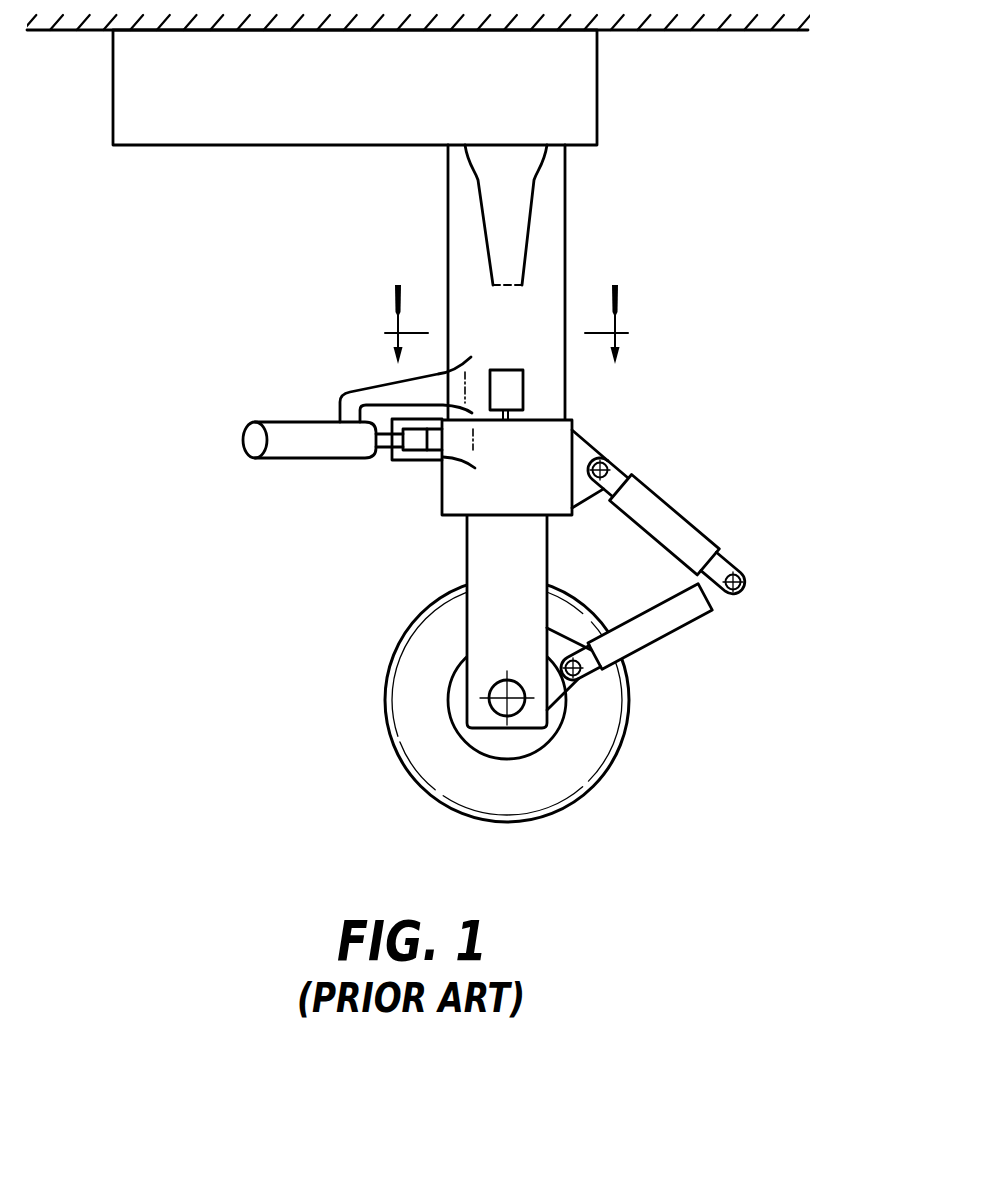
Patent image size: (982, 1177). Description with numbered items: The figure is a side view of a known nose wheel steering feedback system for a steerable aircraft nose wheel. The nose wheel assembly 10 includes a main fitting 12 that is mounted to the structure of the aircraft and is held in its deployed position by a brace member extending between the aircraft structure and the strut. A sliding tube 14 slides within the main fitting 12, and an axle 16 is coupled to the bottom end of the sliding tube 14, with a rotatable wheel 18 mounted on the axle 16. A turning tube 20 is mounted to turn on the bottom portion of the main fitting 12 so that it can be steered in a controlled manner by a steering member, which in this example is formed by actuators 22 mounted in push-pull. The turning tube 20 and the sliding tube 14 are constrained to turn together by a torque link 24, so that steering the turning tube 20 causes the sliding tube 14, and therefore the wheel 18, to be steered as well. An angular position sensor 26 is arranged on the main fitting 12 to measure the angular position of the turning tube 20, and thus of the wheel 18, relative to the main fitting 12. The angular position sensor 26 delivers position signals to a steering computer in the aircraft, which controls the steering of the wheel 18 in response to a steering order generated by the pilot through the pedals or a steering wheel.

The nose wheel assembly 10 is at (697, 336).
The main fitting 12 is at (553, 258).
The sliding tube 14 is at (477, 545).
The axle 16 is at (494, 712).
The wheel 18 is at (607, 760).
The turning tube 20 is at (555, 455).
The actuator 22 is at (297, 425).
The torque link 24 is at (759, 573).
The angular position sensor 26 is at (517, 387).